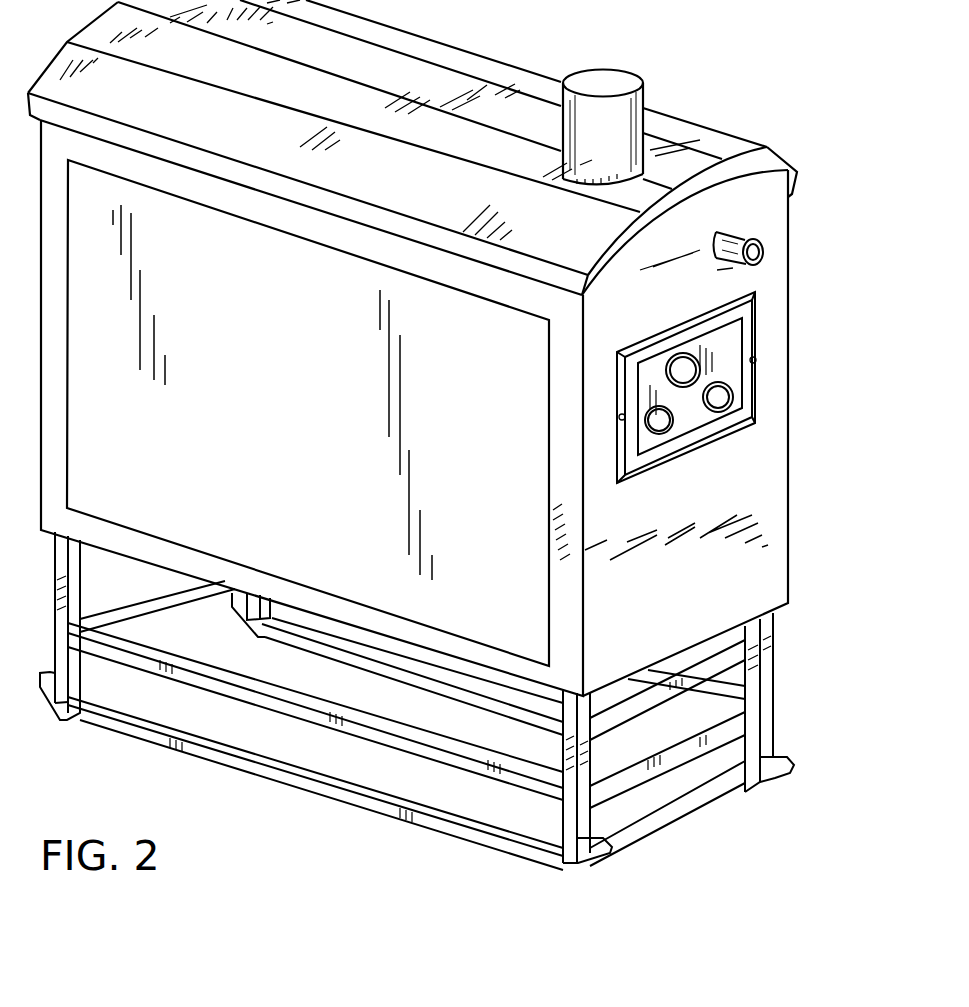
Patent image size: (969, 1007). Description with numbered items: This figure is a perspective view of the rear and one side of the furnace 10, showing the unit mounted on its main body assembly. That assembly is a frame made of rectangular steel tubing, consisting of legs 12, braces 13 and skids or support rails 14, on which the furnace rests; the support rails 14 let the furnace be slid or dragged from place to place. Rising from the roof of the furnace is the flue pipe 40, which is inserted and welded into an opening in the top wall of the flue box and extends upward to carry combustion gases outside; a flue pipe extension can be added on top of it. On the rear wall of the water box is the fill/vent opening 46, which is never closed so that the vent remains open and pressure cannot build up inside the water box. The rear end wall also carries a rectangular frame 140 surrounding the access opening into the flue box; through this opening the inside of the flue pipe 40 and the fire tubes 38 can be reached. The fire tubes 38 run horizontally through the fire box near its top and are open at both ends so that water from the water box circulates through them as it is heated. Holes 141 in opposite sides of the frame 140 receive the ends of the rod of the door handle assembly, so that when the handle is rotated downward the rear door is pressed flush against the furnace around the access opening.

The furnace 10 is at (793, 395).
The legs 12 is at (776, 680).
The braces 13 is at (267, 707).
The support rails 14 is at (410, 826).
The fire tubes 38 is at (664, 438).
The flue pipe 40 is at (690, 320).
The fill/vent opening 46 is at (763, 251).
The rectangular frame 140 is at (617, 378).
The holes 141 is at (757, 360).